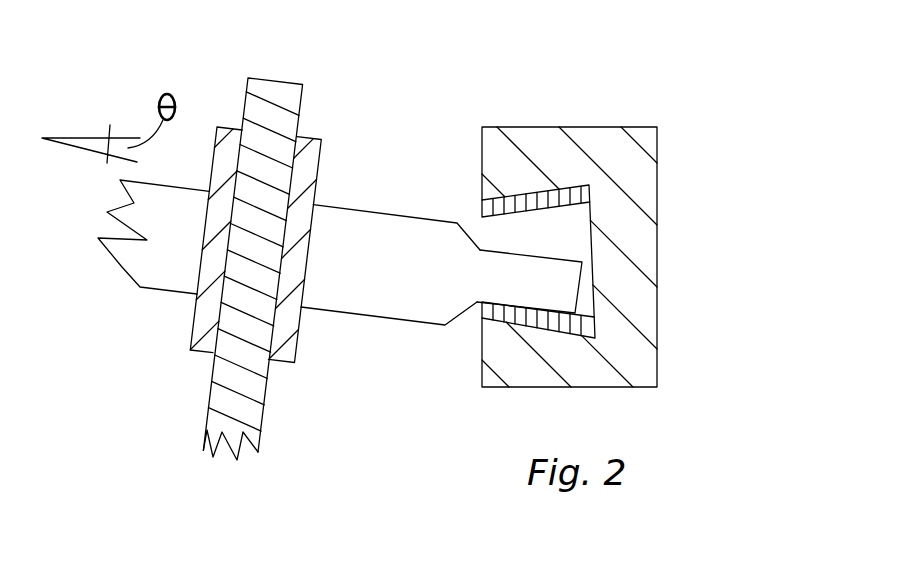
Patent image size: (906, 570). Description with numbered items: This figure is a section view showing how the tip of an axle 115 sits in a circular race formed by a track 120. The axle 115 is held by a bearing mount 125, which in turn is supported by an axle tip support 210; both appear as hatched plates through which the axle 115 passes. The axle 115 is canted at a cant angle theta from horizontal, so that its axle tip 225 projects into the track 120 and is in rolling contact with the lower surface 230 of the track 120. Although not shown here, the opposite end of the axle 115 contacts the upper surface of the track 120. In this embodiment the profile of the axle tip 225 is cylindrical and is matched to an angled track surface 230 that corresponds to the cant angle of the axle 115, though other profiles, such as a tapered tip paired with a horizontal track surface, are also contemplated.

The axle 115 is at (383, 320).
The track 120 is at (608, 143).
The bearing mount 125 is at (322, 140).
The axle tip support 210 is at (270, 77).
The axle tip 225 is at (543, 277).
The lower surface 230 is at (590, 195).